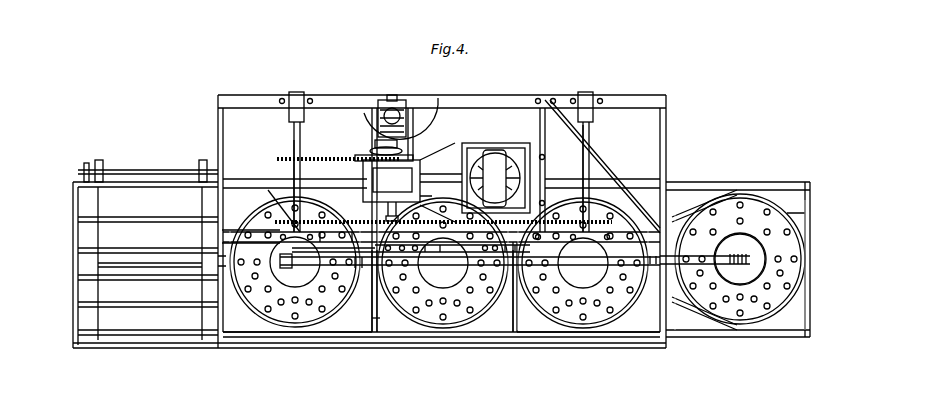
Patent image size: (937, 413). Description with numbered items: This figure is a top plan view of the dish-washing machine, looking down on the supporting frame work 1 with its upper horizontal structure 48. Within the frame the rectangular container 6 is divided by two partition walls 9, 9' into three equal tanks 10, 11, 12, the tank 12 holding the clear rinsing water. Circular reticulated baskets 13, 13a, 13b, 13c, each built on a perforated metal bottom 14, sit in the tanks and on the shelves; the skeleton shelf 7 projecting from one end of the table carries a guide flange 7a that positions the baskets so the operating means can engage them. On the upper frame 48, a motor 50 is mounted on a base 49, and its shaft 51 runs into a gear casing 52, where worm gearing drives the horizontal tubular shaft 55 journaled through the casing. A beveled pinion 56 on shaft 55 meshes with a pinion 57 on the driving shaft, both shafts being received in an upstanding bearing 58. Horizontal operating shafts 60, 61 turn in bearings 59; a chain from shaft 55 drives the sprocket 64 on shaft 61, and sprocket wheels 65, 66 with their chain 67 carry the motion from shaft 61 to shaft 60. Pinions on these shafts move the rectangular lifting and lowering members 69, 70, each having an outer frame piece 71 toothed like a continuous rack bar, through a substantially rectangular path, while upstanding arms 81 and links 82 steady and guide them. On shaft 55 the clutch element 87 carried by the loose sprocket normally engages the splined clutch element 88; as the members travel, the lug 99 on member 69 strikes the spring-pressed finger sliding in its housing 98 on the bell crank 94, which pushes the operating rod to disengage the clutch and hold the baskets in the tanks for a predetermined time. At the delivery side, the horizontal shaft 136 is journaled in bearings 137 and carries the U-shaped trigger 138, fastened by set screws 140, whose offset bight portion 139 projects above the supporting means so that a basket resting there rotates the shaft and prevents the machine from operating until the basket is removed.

The supporting frame work 1 is at (668, 128).
The container 6 is at (222, 262).
The skeleton shelf 7 is at (650, 104).
The guide flange 7a is at (683, 205).
The partition wall 9 is at (504, 314).
The partition wall 9' is at (359, 315).
The tank 10 is at (536, 320).
The tank 11 is at (387, 325).
The tank 12 is at (240, 325).
The reticulated basket 13 is at (747, 327).
The reticulated basket 13a is at (598, 325).
The reticulated basket 13b is at (461, 325).
The reticulated basket 13c is at (282, 327).
The perforated metal bottom 14 is at (268, 303).
The upper horizontal structure 48 is at (218, 124).
The base 49 is at (456, 148).
The motor 50 is at (497, 160).
The motor shaft 51 is at (432, 176).
The gear casing 52 is at (391, 190).
The horizontal tubular shaft 55 is at (455, 222).
The beveled pinion 56 is at (358, 112).
The pinion 57 is at (405, 103).
The upstanding bearing 58 is at (393, 95).
The bearing 59 is at (300, 110).
The horizontal operating shaft 60 is at (589, 133).
The horizontal operating shaft 61 is at (300, 143).
The sprocket 64 is at (282, 157).
The sprocket wheel 65 is at (556, 220).
The sprocket wheel 66 is at (272, 200).
The chain 67 is at (355, 221).
The lifting and lowering member 69 is at (740, 259).
The lifting and lowering member 70 is at (310, 270).
The outer frame piece 71 is at (362, 268).
The upstanding arm 81 is at (222, 236).
The link 82 is at (336, 238).
The clutch element 87 is at (368, 158).
The clutch element 88 is at (374, 144).
The bell crank 94 is at (382, 312).
The housing 98 is at (438, 98).
The projection or lug 99 is at (425, 247).
The horizontal shaft 136 is at (140, 171).
The bearing 137 is at (88, 163).
The U-shaped trigger 138 is at (200, 206).
The bight portion 139 is at (157, 267).
The set screw 140 is at (100, 160).